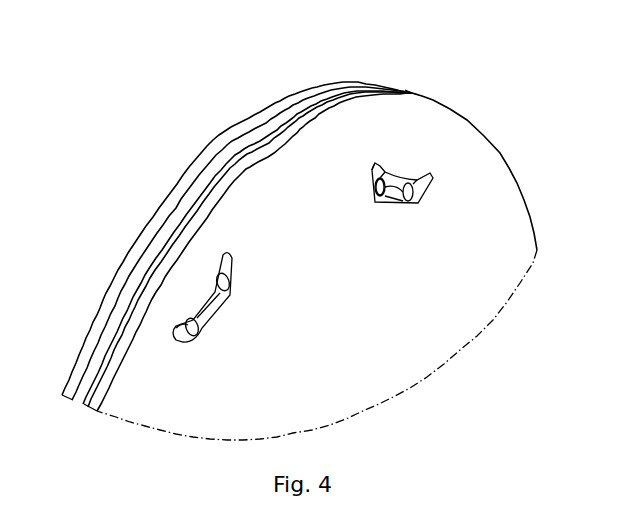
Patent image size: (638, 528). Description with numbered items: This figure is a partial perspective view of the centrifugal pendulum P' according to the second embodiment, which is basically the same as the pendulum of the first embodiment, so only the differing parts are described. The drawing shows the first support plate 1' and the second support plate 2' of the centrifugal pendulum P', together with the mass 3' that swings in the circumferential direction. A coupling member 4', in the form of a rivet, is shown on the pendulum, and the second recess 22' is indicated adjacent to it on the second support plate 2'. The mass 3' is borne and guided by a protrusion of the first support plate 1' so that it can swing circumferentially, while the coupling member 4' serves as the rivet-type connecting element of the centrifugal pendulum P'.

The first support plate 1' is at (237, 241).
The second support plate 2' is at (337, 266).
The mass 3' is at (247, 251).
The coupling member, rivet 4' is at (402, 216).
The second recess 22' is at (357, 202).
The centrifugal pendulum P' is at (466, 64).